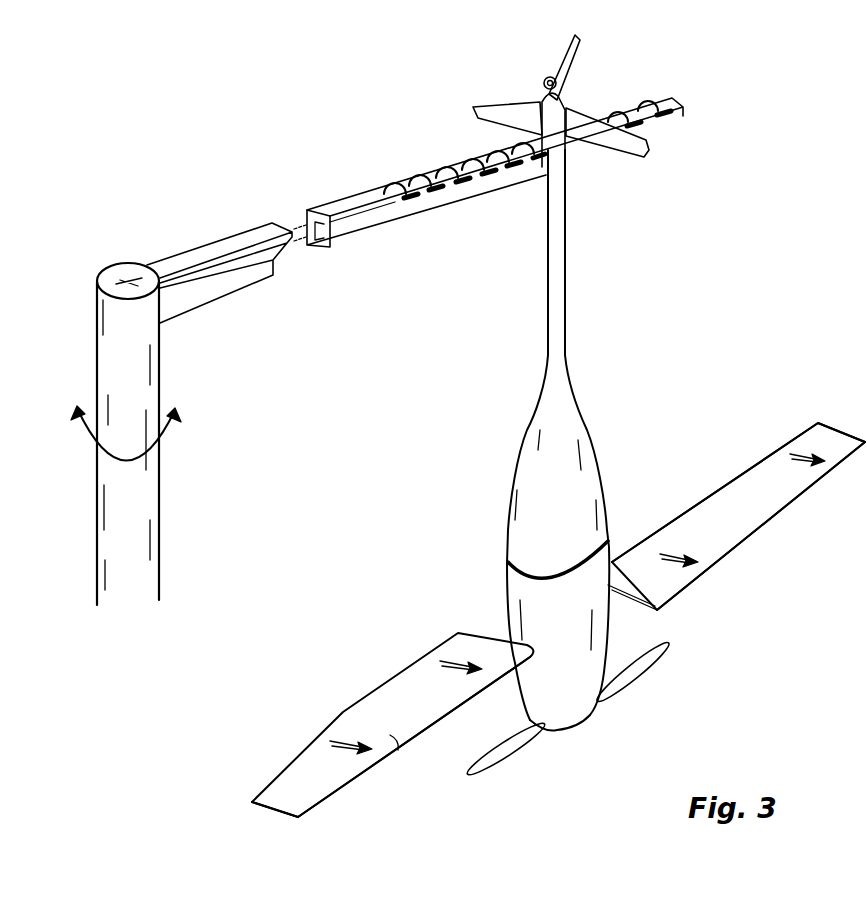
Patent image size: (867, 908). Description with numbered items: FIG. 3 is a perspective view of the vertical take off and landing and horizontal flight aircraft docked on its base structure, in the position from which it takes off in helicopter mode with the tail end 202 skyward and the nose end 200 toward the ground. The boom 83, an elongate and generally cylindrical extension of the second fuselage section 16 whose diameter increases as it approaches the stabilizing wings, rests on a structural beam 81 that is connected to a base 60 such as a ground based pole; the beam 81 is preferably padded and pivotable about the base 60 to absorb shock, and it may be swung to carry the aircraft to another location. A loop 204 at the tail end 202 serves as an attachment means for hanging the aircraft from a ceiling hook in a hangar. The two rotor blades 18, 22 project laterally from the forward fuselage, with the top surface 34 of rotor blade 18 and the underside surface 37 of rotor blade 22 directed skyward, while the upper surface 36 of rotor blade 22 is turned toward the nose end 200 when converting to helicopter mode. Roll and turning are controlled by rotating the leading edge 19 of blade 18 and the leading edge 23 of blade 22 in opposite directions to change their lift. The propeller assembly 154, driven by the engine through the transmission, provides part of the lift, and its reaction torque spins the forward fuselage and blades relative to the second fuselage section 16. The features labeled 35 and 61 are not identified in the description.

The second fuselage section 16 is at (595, 413).
The rotor blade 18 is at (395, 740).
The leading edge 19 is at (422, 735).
The rotor blade 22 is at (748, 512).
The leading edge 23 is at (700, 498).
The top surface 34 is at (367, 720).
The left wing tip 35 is at (322, 805).
The upper surface 36 is at (810, 495).
The underside surface 37 is at (775, 475).
The base 60 is at (115, 355).
The pole top 61 is at (136, 268).
The beam 81 is at (228, 238).
The boom 83 is at (560, 280).
The propeller assembly 154 is at (652, 684).
The nose end 200 is at (587, 740).
The tail end 202 is at (545, 45).
The loop 204 is at (544, 80).